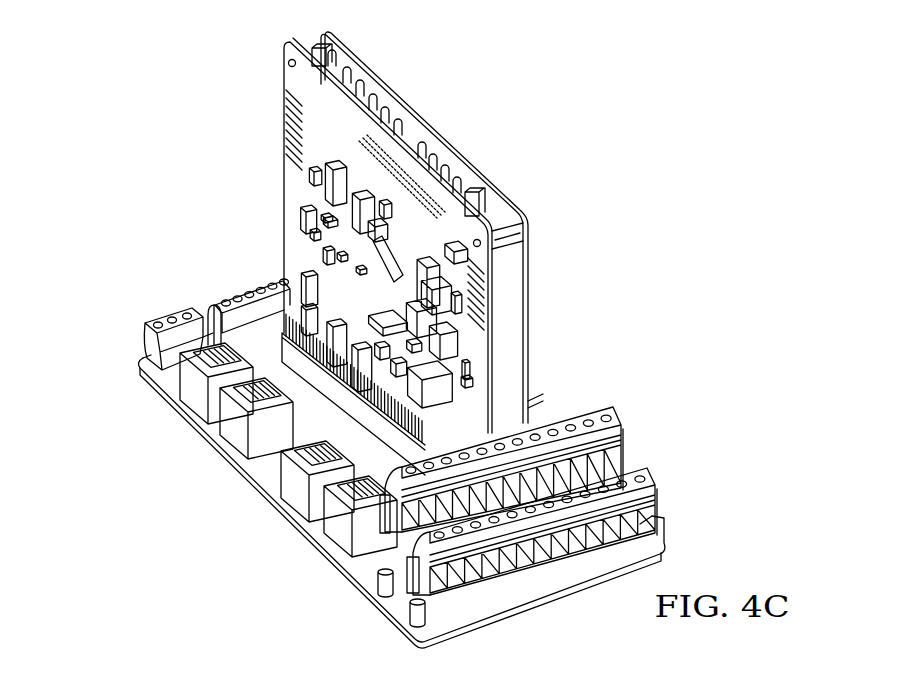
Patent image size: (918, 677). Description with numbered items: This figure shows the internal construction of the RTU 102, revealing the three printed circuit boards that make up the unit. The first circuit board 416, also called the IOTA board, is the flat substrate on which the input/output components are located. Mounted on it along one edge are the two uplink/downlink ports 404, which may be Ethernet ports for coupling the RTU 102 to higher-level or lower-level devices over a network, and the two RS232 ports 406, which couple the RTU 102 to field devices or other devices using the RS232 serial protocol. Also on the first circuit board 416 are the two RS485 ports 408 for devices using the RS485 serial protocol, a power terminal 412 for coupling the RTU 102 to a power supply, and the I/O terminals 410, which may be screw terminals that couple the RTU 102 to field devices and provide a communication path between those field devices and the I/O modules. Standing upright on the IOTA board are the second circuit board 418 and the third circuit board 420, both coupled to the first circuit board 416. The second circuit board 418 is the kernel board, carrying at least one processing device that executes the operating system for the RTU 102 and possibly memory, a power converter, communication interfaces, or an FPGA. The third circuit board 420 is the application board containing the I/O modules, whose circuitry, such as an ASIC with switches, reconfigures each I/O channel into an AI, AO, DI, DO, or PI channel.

The RTU 102 is at (545, 137).
The uplink/downlink ports 404 is at (298, 500).
The RS232 ports 406 is at (196, 401).
The RS485 ports 408 is at (211, 308).
The I/O terminals 410 is at (471, 600).
The power terminal 412 is at (147, 348).
The first circuit board 416 is at (259, 472).
The second circuit board 418 is at (290, 220).
The third circuit board 420 is at (531, 283).